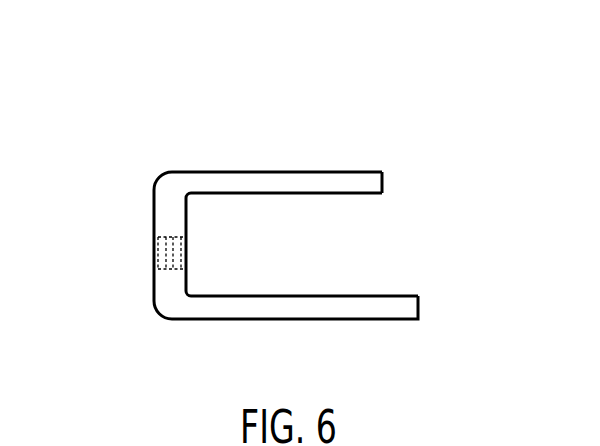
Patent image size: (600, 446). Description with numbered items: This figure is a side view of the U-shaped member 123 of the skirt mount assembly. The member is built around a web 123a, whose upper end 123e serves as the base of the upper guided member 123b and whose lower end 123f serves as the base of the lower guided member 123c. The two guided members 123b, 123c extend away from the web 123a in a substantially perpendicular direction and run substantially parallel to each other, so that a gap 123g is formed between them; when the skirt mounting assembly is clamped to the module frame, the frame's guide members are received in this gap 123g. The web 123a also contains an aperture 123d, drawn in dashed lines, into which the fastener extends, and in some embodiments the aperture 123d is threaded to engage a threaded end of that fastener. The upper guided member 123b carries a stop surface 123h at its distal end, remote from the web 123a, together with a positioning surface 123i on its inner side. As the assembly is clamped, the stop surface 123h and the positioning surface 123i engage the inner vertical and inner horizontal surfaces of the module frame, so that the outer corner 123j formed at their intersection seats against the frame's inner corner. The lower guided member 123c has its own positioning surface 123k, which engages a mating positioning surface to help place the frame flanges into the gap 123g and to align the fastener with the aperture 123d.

The U-shaped member 123 is at (298, 86).
The web 123a is at (154, 290).
The guided member 123b is at (226, 171).
The guided member 123c is at (226, 320).
The aperture 123d is at (168, 253).
The upper end 123e is at (158, 178).
The lower end 123f is at (158, 313).
The gap 123g is at (410, 198).
The stop surface 123h is at (385, 174).
The positioning surface 123i is at (270, 194).
The outer corner 123j is at (383, 196).
The positioning surface 123k is at (270, 295).